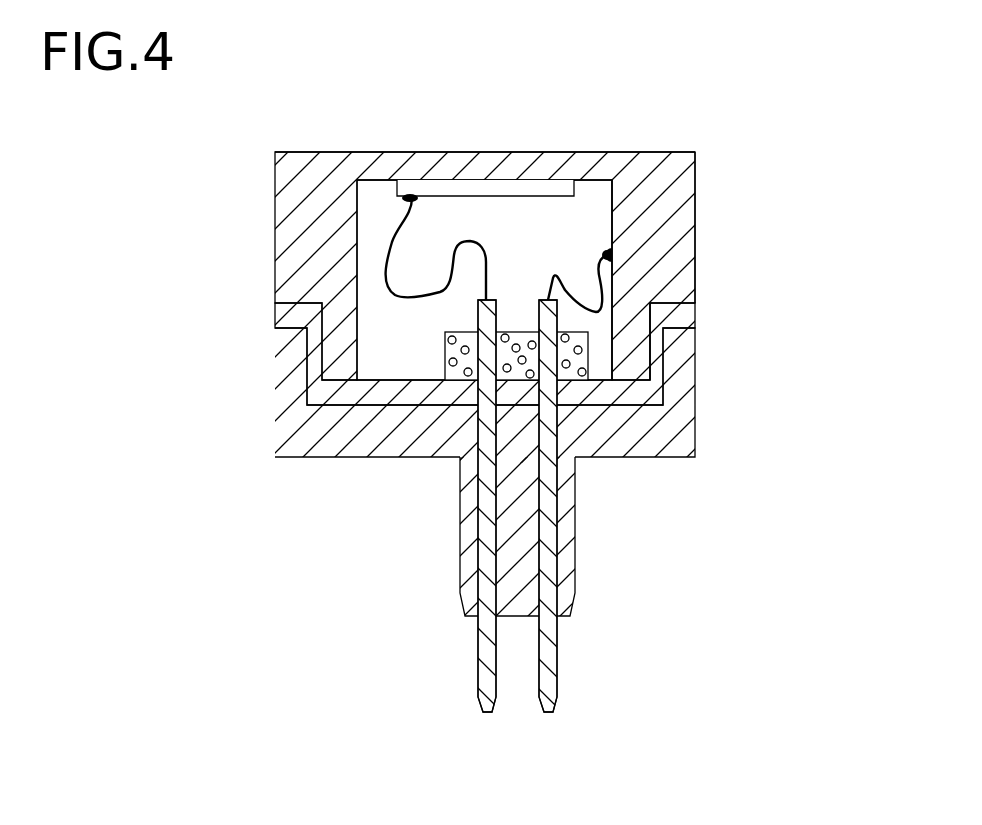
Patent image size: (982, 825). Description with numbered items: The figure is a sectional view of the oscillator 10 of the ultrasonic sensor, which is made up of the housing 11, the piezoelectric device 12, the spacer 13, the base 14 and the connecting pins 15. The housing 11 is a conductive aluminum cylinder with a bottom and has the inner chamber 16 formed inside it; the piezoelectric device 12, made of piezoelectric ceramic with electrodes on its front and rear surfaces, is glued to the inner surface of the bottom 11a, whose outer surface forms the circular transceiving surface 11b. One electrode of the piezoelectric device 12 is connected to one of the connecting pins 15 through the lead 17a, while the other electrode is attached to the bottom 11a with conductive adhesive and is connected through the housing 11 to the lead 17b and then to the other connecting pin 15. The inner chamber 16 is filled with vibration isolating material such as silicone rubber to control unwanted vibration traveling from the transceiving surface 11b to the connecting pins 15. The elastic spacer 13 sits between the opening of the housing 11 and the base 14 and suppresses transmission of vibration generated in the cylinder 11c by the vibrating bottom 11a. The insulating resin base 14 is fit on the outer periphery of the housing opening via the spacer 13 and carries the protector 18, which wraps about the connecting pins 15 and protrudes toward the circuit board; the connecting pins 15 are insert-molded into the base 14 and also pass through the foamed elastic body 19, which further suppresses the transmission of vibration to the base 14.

The oscillator 10 is at (501, 397).
The housing 11 is at (491, 240).
The bottom 11a is at (425, 160).
The transceiving surface 11b is at (585, 156).
The cylinder 11c is at (683, 273).
The piezoelectric device 12 is at (493, 188).
The spacer 13 is at (683, 317).
The base 14 is at (685, 411).
The connecting pins 15 is at (553, 657).
The inner chamber 16 is at (370, 265).
The lead 17a is at (410, 222).
The lead 17b is at (567, 277).
The protector 18 is at (565, 536).
The foamed elastic body 19 is at (447, 357).